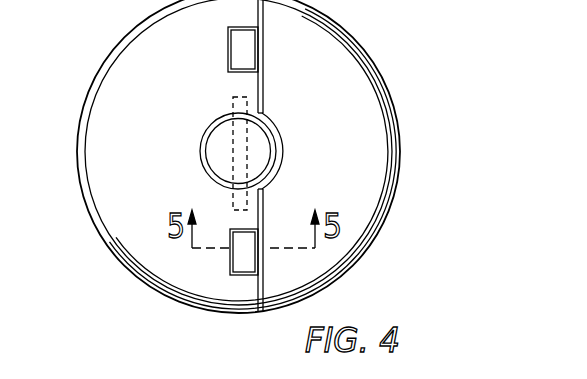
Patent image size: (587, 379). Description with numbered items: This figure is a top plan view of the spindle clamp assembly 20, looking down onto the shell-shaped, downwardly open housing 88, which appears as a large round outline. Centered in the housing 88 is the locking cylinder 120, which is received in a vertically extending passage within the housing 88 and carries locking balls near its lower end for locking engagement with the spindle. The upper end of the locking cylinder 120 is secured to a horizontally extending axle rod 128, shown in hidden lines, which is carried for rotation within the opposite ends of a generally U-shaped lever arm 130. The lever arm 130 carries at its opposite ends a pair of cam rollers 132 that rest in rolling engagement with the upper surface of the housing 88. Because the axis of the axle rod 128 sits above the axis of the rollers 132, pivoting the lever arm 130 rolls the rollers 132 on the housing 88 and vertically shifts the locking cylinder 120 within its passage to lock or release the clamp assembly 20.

The clamp assembly 20 is at (380, 46).
The lever arm 130 is at (123, 70).
The housing 88 is at (385, 87).
The locking cylinder 120 is at (260, 153).
The cam rollers 132 is at (250, 43).
The axle rod 128 is at (233, 107).